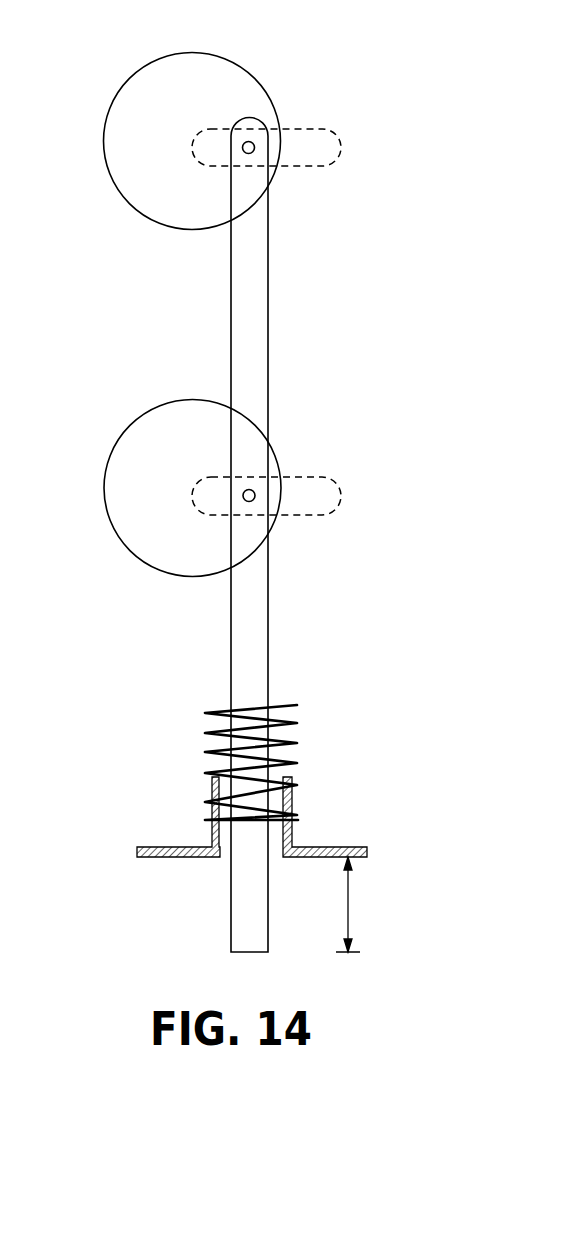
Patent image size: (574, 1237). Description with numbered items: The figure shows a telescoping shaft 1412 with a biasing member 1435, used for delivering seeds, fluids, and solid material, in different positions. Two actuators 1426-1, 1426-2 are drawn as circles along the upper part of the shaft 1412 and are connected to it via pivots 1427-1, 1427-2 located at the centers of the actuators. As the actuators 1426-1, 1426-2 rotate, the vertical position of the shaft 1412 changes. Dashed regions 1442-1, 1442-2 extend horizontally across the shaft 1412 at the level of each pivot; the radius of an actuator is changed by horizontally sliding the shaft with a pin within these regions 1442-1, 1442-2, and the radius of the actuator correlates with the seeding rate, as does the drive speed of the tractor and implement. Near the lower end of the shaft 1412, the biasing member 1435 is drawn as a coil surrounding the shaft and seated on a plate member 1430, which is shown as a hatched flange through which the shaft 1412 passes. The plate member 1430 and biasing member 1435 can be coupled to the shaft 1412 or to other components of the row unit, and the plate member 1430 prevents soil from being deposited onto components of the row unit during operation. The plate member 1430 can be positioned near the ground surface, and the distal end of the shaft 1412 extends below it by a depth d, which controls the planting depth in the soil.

The shaft 1412 is at (268, 313).
The actuator 1426-1 is at (165, 53).
The actuator 1426-2 is at (167, 403).
The pivot 1427-1 is at (255, 148).
The pivot 1427-2 is at (255, 496).
The region 1442-1 is at (327, 163).
The region 1442-2 is at (327, 512).
The biasing member 1435 is at (293, 703).
The plate member 1430 is at (305, 845).
The depth d is at (350, 904).